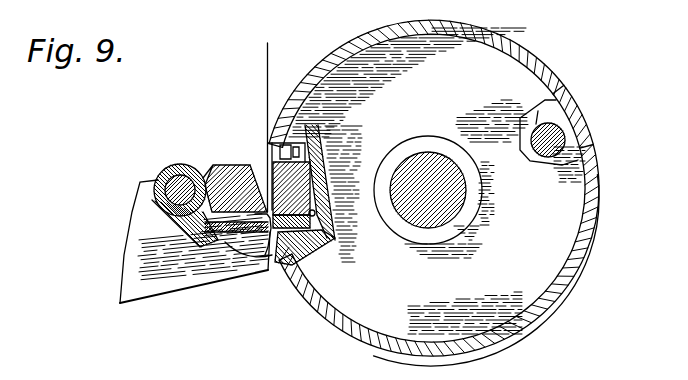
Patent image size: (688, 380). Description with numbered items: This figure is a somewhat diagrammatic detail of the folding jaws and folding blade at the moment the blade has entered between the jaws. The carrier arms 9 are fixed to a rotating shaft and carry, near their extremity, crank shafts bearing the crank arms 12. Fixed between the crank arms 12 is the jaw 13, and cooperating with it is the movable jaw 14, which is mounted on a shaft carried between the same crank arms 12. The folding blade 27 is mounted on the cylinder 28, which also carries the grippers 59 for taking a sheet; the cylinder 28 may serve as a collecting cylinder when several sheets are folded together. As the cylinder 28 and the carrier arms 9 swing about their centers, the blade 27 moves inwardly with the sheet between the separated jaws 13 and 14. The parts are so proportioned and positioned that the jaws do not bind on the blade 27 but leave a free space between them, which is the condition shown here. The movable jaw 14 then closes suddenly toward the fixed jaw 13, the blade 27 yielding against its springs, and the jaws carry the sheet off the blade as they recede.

The carrier arms 9 is at (172, 277).
The crank arms 12 is at (262, 253).
The jaw 13 is at (230, 176).
The movable jaw 14 is at (235, 248).
The folding blade 27 is at (307, 238).
The cylinder 28 is at (488, 68).
The grippers 59 is at (582, 143).